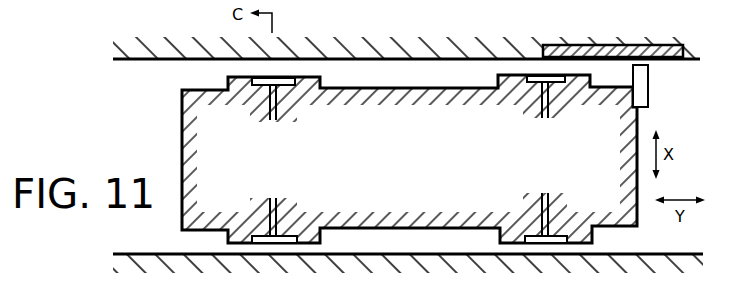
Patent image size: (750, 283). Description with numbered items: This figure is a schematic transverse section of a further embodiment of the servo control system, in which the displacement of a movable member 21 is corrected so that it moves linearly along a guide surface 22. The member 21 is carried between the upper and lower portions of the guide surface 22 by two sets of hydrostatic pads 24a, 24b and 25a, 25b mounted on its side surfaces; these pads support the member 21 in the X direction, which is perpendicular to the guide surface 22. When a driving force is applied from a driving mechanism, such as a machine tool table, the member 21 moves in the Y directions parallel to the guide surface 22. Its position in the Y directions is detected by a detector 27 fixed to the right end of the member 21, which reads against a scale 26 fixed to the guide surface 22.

The member 21 is at (184, 130).
The guide surface 22 is at (168, 62).
The hydrostatic pad 24a is at (298, 77).
The hydrostatic pad 24b is at (297, 246).
The hydrostatic pad 25a is at (525, 76).
The hydrostatic pad 25b is at (525, 242).
The scale 26 is at (676, 52).
The detector 27 is at (640, 97).